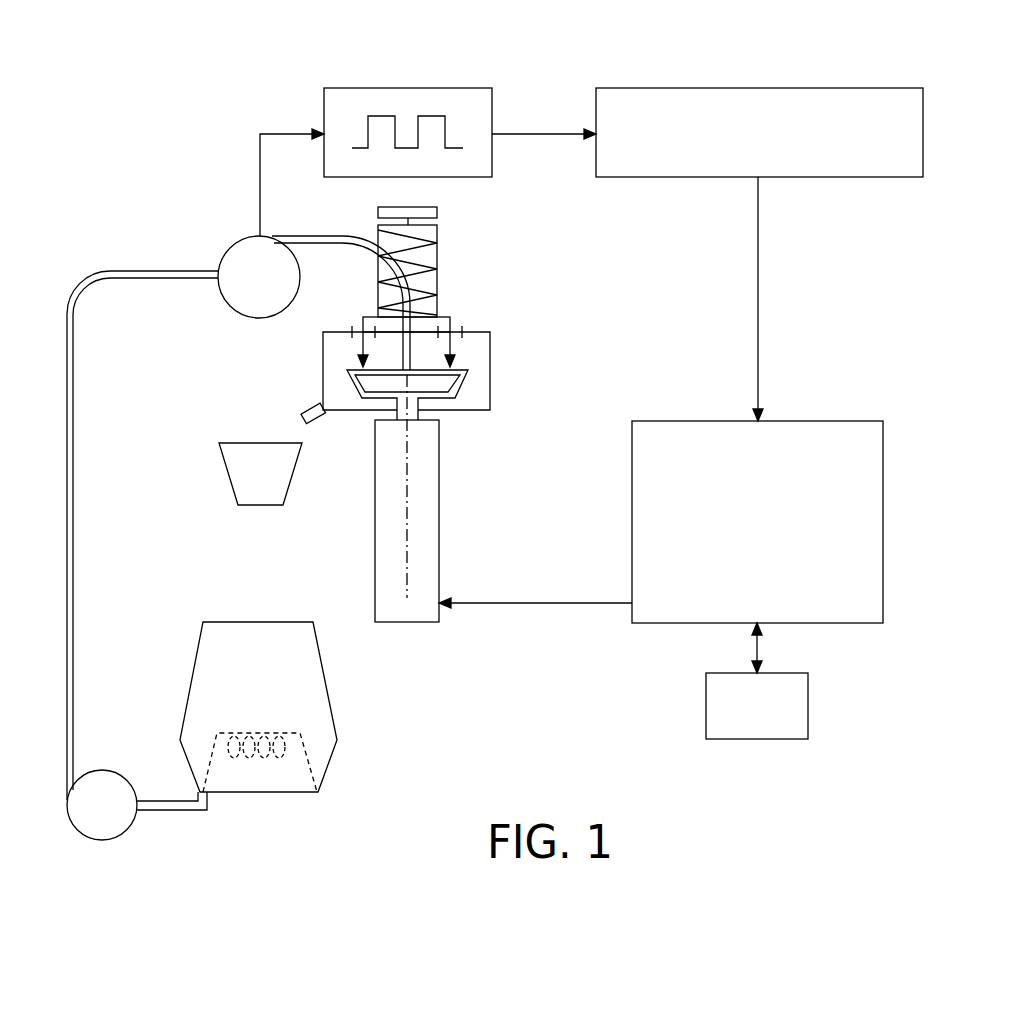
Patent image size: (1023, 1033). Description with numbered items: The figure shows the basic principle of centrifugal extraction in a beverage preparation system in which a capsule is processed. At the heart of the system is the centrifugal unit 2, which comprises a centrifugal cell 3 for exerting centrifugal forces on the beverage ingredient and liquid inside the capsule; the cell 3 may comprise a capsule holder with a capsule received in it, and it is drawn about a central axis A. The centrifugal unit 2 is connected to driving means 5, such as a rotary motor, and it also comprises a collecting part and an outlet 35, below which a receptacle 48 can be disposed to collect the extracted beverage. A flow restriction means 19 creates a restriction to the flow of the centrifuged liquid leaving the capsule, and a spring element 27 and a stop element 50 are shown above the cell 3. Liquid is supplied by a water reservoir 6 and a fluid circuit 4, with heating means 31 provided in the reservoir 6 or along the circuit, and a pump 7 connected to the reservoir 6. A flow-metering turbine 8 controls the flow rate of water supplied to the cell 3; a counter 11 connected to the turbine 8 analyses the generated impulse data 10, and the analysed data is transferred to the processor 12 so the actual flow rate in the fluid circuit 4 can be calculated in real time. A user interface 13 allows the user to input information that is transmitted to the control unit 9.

The centrifugal unit 2 is at (478, 410).
The centrifugal cell 3 is at (475, 394).
The fluid circuit 4 is at (145, 271).
The driving means 5 is at (408, 622).
The water reservoir 6 is at (337, 727).
The pump 7 is at (100, 840).
The flow-metering turbine 8 is at (240, 242).
The control unit 9 is at (945, 224).
The impulse data 10 is at (357, 88).
The counter 11 is at (923, 140).
The processor 12 is at (883, 535).
The user interface 13 is at (808, 710).
The flow restriction means 19 is at (450, 343).
The spring 27 is at (437, 252).
The heating means 31 is at (210, 763).
The outlet 35 is at (308, 406).
The receptacle 48 is at (225, 477).
The stop element 50 is at (455, 212).
The axis A is at (407, 535).